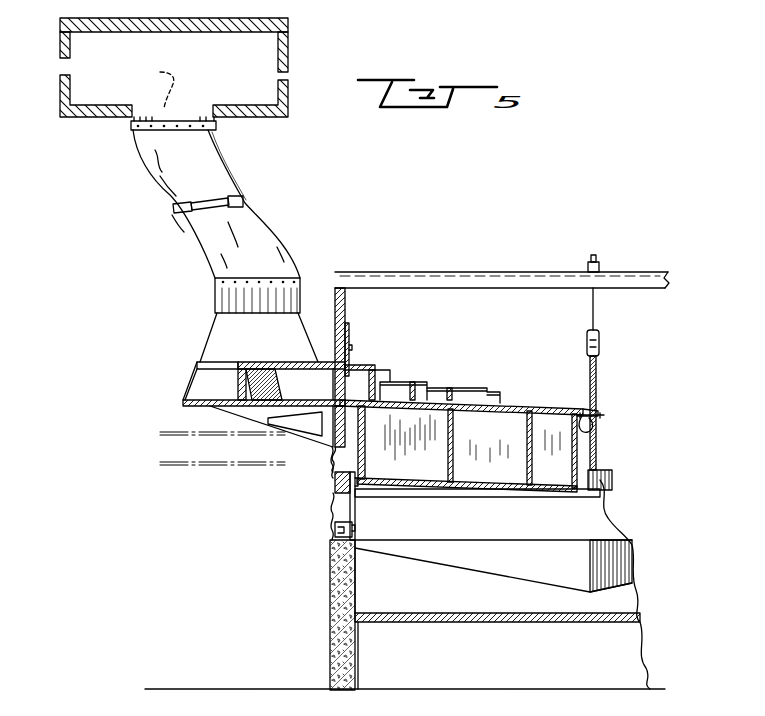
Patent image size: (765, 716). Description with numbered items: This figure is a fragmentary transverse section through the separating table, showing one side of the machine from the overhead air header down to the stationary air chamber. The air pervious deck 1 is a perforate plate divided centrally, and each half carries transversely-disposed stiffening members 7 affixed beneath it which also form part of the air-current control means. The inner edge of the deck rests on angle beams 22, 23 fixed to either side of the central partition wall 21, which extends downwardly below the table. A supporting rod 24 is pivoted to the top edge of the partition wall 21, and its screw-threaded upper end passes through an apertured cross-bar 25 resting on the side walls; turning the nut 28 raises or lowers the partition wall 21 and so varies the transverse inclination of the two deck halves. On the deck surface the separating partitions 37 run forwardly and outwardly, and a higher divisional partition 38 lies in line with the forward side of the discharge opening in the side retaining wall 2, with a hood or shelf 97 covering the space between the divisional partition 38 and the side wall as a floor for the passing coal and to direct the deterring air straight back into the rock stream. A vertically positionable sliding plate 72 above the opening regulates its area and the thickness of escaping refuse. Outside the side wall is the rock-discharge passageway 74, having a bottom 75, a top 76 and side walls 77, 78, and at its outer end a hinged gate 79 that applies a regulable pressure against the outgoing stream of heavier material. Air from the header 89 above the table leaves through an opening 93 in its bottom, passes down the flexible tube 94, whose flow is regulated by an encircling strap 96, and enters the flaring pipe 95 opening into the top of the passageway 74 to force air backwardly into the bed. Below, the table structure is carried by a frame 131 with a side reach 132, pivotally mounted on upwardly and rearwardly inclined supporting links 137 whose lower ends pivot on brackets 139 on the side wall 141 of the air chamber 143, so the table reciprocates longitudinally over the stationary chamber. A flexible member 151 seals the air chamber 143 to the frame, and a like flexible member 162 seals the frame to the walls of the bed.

The header 89 is at (284, 54).
The opening 93 is at (155, 86).
The flexible tube 94 is at (265, 229).
The strap 96 is at (244, 201).
The flaring pipe 95 is at (216, 330).
The side wall 77 is at (210, 381).
The top 76 is at (262, 362).
The gate 79 is at (250, 380).
The passageway 74 is at (292, 407).
The bottom 75 is at (288, 392).
The side wall 78 is at (323, 370).
The side retaining wall 2 is at (341, 296).
The sliding plate 72 is at (351, 336).
The supporting cross-bar 25 is at (495, 272).
The nut 28 is at (601, 264).
The supporting rod 24 is at (598, 314).
The partition wall 21 is at (598, 369).
The angle beam 23 is at (602, 414).
The angle beam 22 is at (591, 428).
The hood 97 is at (370, 367).
The divisional partition 38 is at (421, 380).
The separating partition 37 is at (469, 398).
The deck 1 is at (510, 400).
The stiffening member 7 is at (454, 436).
The side reach 132 is at (447, 490).
The supporting link 137 is at (357, 509).
The frame 131 is at (333, 481).
The flexible member 162 is at (328, 464).
The flexible member 151 is at (330, 512).
The bracket 139 is at (356, 528).
The side wall of air chamber 141 is at (330, 568).
The air chamber 143 is at (385, 585).